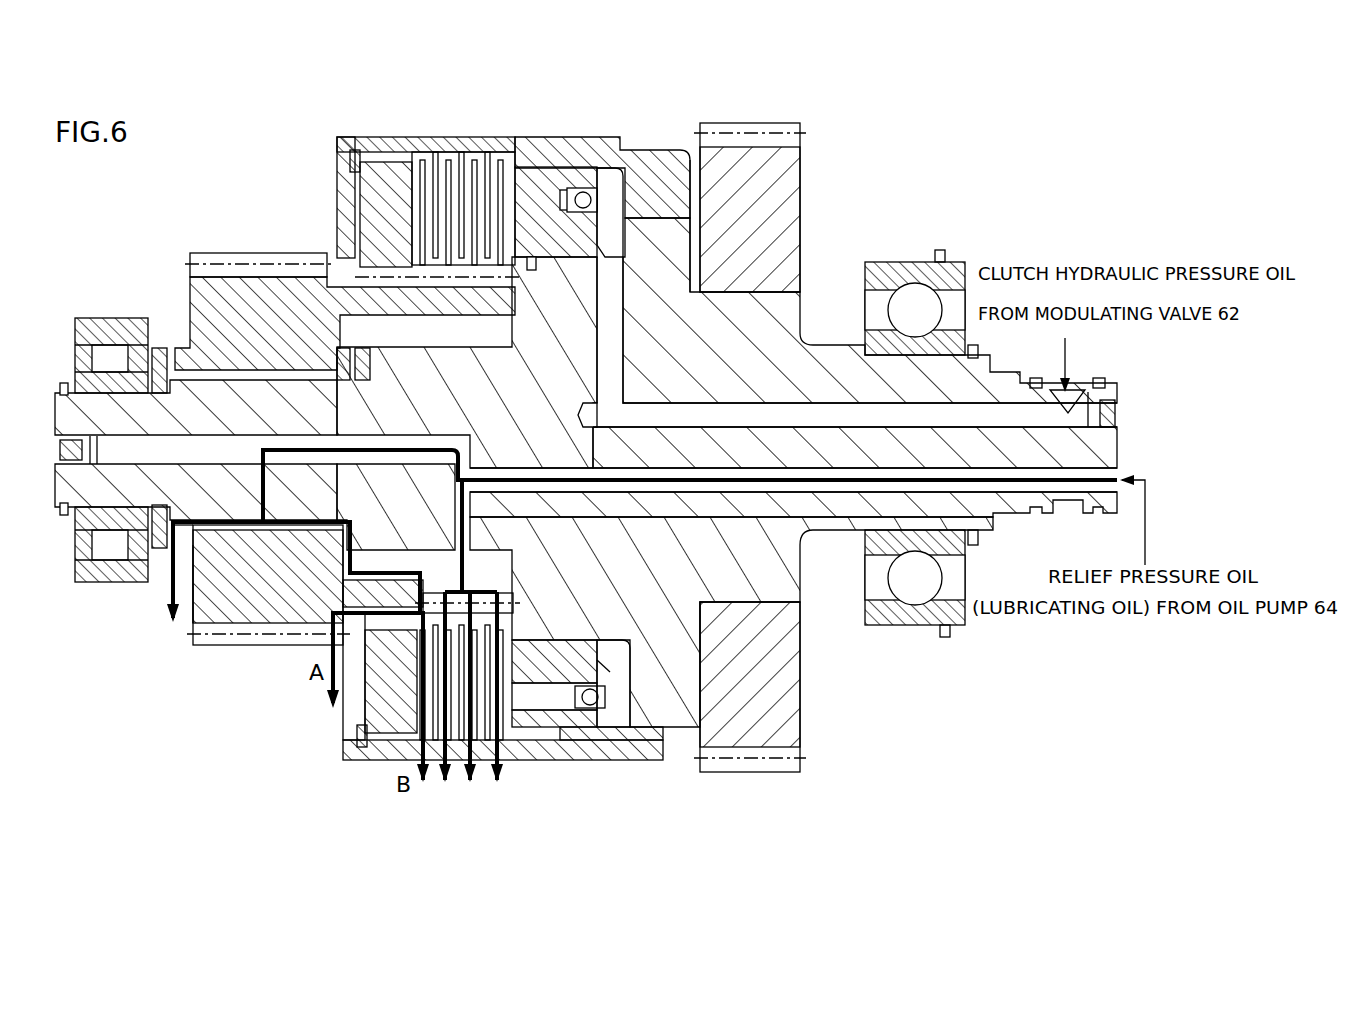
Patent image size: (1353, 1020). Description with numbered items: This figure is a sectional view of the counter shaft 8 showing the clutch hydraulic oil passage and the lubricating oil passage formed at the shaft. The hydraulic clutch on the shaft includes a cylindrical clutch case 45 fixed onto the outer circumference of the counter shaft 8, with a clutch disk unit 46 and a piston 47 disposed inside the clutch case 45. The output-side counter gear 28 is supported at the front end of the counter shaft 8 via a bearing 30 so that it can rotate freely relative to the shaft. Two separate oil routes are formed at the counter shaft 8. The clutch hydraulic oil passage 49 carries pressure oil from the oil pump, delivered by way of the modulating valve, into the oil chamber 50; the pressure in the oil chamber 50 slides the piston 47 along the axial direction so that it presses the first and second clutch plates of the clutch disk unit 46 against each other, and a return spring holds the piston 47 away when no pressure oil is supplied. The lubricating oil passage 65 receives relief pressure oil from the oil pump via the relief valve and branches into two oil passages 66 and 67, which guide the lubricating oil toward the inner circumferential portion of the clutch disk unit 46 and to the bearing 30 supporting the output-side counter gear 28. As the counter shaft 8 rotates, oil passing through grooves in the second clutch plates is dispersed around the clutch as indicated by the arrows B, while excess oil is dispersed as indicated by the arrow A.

The counter shaft 8 is at (60, 415).
The output-side counter gear 28 is at (272, 617).
The bearing 30 is at (228, 600).
The clutch case 45 is at (667, 167).
The clutch disk unit 46 is at (425, 204).
The piston 47 is at (548, 250).
The clutch hydraulic oil passage 49 is at (618, 317).
The oil chamber 50 is at (617, 250).
The lubricating oil passage 65 is at (623, 488).
The oil passage 66 is at (470, 512).
The oil passage 67 is at (362, 440).